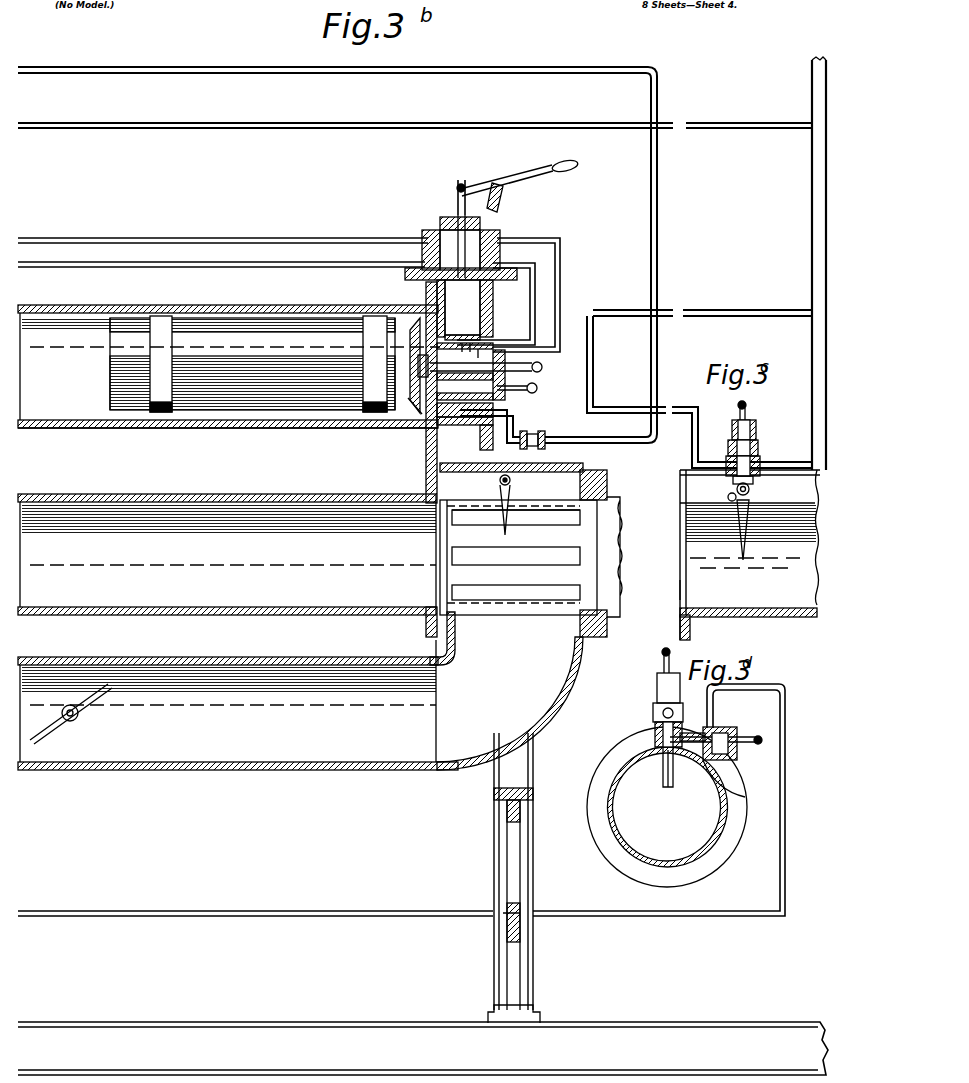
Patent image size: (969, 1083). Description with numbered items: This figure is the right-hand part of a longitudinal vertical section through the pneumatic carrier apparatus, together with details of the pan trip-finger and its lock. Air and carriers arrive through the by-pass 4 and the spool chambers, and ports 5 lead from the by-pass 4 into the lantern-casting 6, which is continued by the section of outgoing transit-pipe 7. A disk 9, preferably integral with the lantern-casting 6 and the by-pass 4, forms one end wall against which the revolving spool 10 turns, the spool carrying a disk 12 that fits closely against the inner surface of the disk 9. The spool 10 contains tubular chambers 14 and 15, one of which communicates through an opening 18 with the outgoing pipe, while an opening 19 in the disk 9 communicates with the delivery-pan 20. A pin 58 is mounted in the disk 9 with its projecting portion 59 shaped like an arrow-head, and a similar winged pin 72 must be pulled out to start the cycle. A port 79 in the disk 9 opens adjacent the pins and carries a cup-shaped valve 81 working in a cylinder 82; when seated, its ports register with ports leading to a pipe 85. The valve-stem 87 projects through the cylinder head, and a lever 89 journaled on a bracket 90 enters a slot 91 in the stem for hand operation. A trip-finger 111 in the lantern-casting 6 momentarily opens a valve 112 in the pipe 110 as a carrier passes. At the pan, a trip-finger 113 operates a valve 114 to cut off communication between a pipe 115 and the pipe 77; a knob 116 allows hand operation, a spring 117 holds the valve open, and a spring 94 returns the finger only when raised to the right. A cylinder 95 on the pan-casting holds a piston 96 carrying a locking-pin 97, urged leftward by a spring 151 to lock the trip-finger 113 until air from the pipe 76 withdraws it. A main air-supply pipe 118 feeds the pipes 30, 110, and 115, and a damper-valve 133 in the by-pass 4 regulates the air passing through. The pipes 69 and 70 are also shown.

In FIG. 3B, the by-pass 4 is at (500, 683).
In FIG. 3B, the ports 5 is at (577, 595).
In FIG. 3B, the lantern-casting 6 is at (590, 514).
In FIG. 3B, the outgoing transit-pipe section 7 is at (608, 618).
In FIG. 3B, the disk 9 is at (446, 445).
In FIG. 3B, the revolving spool 10 is at (191, 430).
In FIG. 3B, the disk 12 is at (426, 465).
In FIG. 3B, the tubular chamber 14 is at (229, 366).
In FIG. 3B, the tubular chamber 15 is at (227, 554).
In FIG. 3B, the opening 18 is at (440, 580).
In FIG. 3C, the opening 19 is at (682, 588).
In FIG. 3C, the delivery-pan 20 is at (737, 623).
In FIG. 3D, the delivery-pan 20 is at (680, 864).
In FIG. 3B, the pipe 30 is at (102, 124).
In FIG. 3B, the pin 58 is at (414, 320).
In FIG. 3B, the projecting portion 59 is at (416, 368).
In FIG. 3B, the pipe 69 is at (250, 240).
In FIG. 3B, the pipe 70 is at (252, 266).
In FIG. 3B, the pin 72 is at (418, 420).
In FIG. 3B, the pipe 76 is at (363, 919).
In FIG. 3B, the pipe 77 is at (688, 396).
In FIG. 3B, the port 79 is at (430, 328).
In FIG. 3B, the valve 81 is at (500, 262).
In FIG. 3B, the cylinder 82 is at (428, 232).
In FIG. 3B, the pipe 85 is at (486, 236).
In FIG. 3B, the valve-stem 87 is at (455, 200).
In FIG. 3B, the lever 89 is at (500, 182).
In FIG. 3B, the bracket 90 is at (566, 172).
In FIG. 3B, the slot 91 is at (458, 186).
In FIG. 3C, the spring 94 is at (750, 486).
In FIG. 3D, the cylinder 95 is at (728, 731).
In FIG. 3D, the piston 96 is at (738, 756).
In FIG. 3C, the locking-pin 97 is at (728, 497).
In FIG. 3D, the locking-pin 97 is at (744, 738).
In FIG. 3B, the pipe 110 is at (245, 70).
In FIG. 3B, the trip-finger 111 is at (514, 490).
In FIG. 3B, the valve 112 is at (542, 444).
In FIG. 3C, the trip-finger 113 is at (750, 501).
In FIG. 3D, the trip-finger 113 is at (672, 788).
In FIG. 3C, the valve 114 is at (754, 447).
In FIG. 3C, the pipe 115 is at (760, 470).
In FIG. 3D, the pipe 115 is at (657, 712).
In FIG. 3C, the knob 116 is at (748, 393).
In FIG. 3D, the knob 116 is at (665, 651).
In FIG. 3C, the spring 117 is at (754, 425).
In FIG. 3B, the main air-supply pipe 118 is at (812, 232).
In FIG. 3B, the damper-valve 133 is at (80, 718).
In FIG. 3D, the spring 151 is at (741, 785).